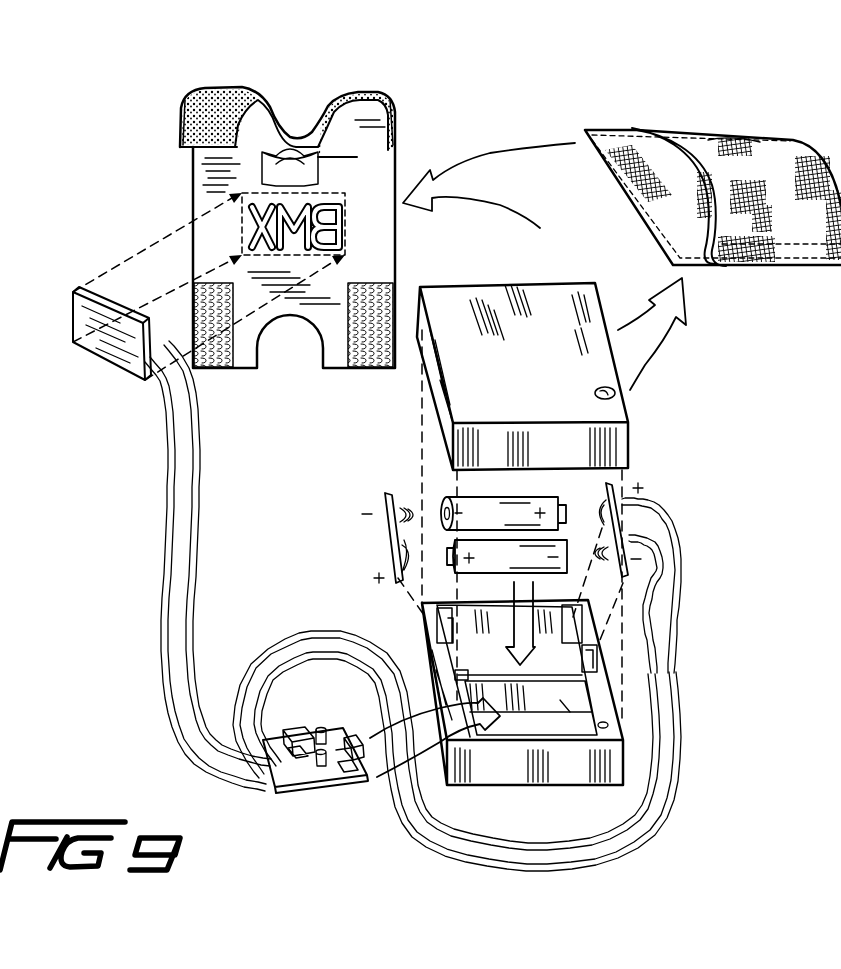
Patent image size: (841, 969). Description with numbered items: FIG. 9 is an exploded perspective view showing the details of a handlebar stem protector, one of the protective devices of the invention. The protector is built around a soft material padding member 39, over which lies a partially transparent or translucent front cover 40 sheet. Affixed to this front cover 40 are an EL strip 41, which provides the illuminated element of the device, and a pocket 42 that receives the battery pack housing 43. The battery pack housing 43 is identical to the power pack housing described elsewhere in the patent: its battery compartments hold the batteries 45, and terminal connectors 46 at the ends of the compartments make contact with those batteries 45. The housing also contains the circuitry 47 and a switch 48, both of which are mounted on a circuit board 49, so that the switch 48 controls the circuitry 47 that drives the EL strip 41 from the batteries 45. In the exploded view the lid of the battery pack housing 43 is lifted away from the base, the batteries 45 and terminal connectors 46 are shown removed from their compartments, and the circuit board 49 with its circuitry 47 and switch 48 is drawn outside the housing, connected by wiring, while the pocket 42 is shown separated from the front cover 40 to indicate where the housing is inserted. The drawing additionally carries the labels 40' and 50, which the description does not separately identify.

The padding member 39 is at (365, 230).
The front cover 40 is at (496, 403).
The mating hook-and-loop fastener patch 40' is at (321, 240).
The EL strip 41 is at (110, 352).
The pocket 42 is at (752, 158).
The battery pack housing 43 is at (453, 378).
The batteries 45 is at (548, 500).
The terminal connectors 46 is at (382, 539).
The circuitry 47 is at (328, 802).
The switch 48 is at (352, 770).
The circuit board 49 is at (283, 790).
The housing interior floor 50 is at (557, 725).